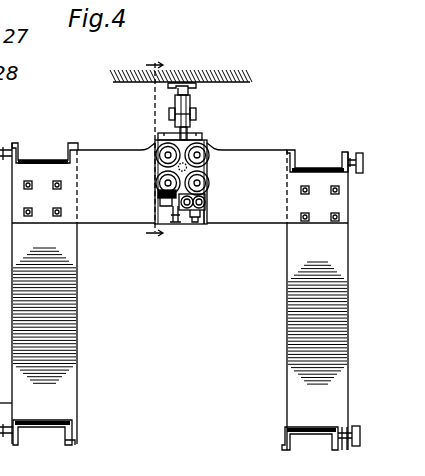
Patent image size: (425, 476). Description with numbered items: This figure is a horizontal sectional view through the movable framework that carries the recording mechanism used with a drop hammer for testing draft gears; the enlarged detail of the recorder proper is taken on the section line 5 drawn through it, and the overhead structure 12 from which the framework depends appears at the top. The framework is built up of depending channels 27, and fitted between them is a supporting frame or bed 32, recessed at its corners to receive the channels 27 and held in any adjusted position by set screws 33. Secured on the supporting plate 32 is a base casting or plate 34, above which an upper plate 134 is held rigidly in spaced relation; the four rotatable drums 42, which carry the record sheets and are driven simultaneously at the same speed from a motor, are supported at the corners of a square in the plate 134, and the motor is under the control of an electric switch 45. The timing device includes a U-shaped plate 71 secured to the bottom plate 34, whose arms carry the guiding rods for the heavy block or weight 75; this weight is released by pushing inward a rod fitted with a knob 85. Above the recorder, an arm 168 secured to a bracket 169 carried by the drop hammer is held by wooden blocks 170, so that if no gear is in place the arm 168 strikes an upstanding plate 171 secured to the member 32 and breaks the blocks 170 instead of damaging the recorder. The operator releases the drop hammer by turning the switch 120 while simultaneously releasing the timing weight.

The section line 5— 5 is at (154, 152).
The ceiling / overhead support 12 is at (195, 78).
The channels 27 is at (312, 166).
The supporting frame or bed 32 is at (112, 144).
The set screws 33 is at (359, 155).
The base casting or plate 34 is at (212, 221).
The rotatable drums 42 is at (157, 162).
The electric switch 45 is at (206, 202).
The U-shaped plate 71 is at (158, 193).
The block or weight 75 is at (161, 201).
The knob 85 is at (176, 223).
The switch 120 is at (195, 218).
The upper plate 134 is at (209, 148).
The arm 168 is at (158, 138).
The bracket 169 is at (191, 104).
The wooden blocks 170 is at (170, 118).
The upstanding plate 171 is at (190, 137).